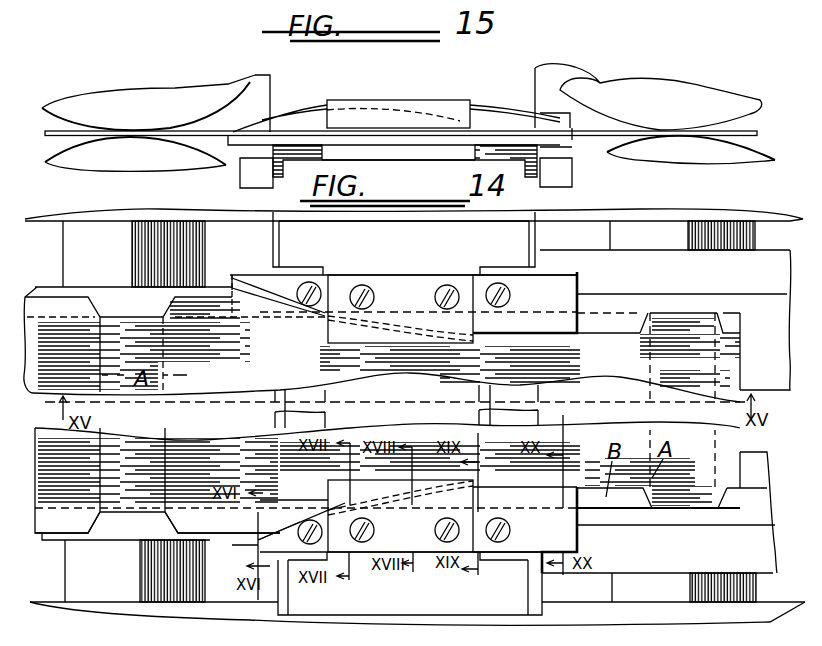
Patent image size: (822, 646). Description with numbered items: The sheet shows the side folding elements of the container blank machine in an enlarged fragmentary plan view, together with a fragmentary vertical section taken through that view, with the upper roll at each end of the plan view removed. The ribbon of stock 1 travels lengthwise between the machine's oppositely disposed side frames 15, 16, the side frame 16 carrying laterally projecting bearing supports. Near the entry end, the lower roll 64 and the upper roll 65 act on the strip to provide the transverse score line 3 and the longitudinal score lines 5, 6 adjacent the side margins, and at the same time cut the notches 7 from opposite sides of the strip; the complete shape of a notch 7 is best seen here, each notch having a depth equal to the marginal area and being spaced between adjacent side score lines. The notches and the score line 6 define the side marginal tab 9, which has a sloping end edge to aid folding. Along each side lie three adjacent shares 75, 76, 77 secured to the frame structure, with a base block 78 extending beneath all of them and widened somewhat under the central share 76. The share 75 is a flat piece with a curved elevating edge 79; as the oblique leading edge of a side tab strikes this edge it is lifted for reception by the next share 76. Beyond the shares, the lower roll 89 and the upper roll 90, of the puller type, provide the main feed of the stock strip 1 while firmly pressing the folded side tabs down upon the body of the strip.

In FIG. 14, the ribbon of stock 1 is at (228, 452).
In FIG. 14, the transverse score line 3 is at (716, 455).
In FIG. 14, the score line 5 is at (181, 482).
In FIG. 14, the score line 6 is at (280, 312).
In FIG. 14, the notch 7 is at (117, 312).
In FIG. 14, the side marginal tab 9 is at (658, 356).
In FIG. 14, the side frame 15 is at (143, 608).
In FIG. 14, the side frame 16 is at (148, 213).
In FIG. 15, the roll 64 is at (96, 152).
In FIG. 14, the roll 64 is at (157, 528).
In FIG. 15, the upper roll 65 is at (78, 112).
In FIG. 15, the share 75 is at (293, 116).
In FIG. 14, the share 75 is at (288, 287).
In FIG. 15, the central share 76 is at (370, 113).
In FIG. 14, the central share 76 is at (389, 297).
In FIG. 15, the share 77 is at (487, 118).
In FIG. 14, the share 77 is at (526, 285).
In FIG. 15, the base block 78 is at (386, 140).
In FIG. 14, the base block 78 is at (232, 276).
In FIG. 14, the curved elevating edge 79 is at (272, 530).
In FIG. 15, the lower roll 89 is at (665, 146).
In FIG. 14, the lower roll 89 is at (753, 508).
In FIG. 15, the upper roll 90 is at (700, 92).